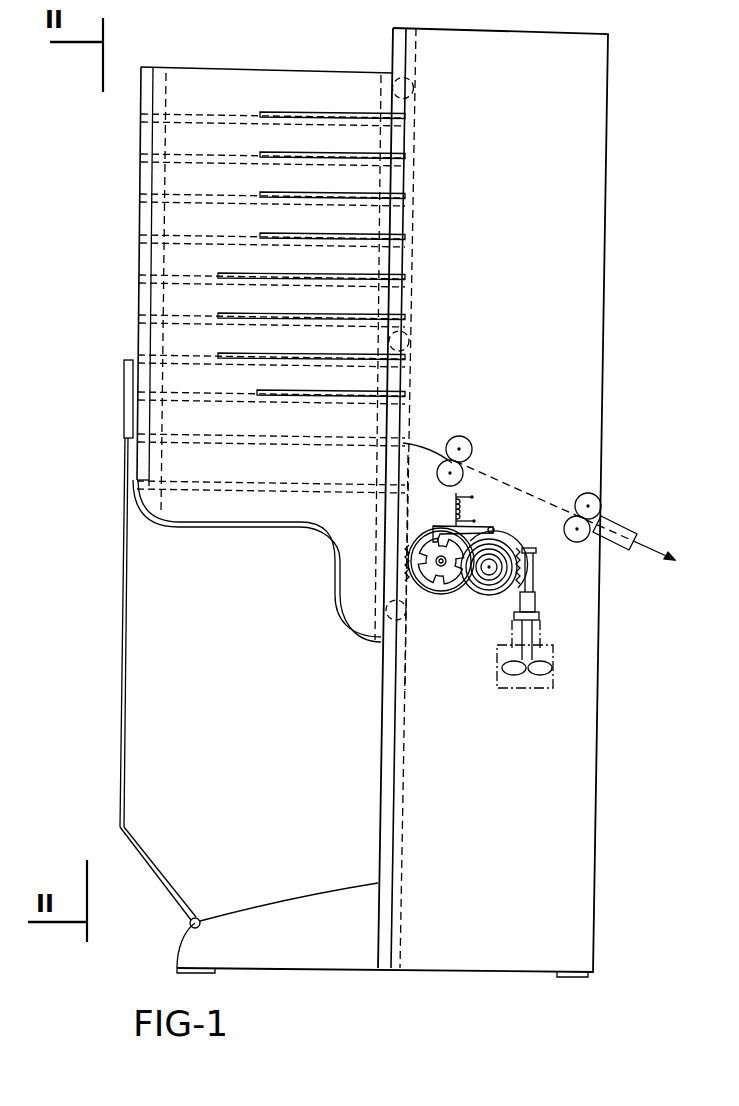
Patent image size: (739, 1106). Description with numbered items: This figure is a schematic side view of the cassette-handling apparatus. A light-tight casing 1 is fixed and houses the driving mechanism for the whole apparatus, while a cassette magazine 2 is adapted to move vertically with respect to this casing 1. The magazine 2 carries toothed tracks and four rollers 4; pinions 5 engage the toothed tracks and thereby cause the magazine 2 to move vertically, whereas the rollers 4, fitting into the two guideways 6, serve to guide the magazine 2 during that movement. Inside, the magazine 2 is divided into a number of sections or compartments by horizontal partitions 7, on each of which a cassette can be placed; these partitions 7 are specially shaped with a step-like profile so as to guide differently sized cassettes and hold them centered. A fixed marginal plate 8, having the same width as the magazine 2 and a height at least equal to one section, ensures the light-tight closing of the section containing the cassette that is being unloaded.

The light-tight casing 1 is at (604, 72).
The cassette magazine 2 is at (188, 72).
The rollers 4 is at (413, 88).
The pinions 5 is at (539, 562).
The guideways 6 is at (398, 968).
The horizontal partitions 7 is at (230, 490).
The fixed marginal plate 8 is at (124, 410).